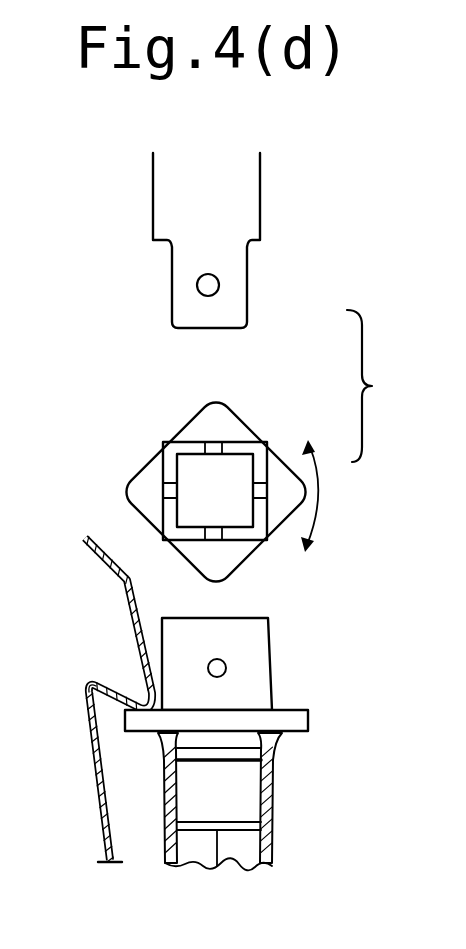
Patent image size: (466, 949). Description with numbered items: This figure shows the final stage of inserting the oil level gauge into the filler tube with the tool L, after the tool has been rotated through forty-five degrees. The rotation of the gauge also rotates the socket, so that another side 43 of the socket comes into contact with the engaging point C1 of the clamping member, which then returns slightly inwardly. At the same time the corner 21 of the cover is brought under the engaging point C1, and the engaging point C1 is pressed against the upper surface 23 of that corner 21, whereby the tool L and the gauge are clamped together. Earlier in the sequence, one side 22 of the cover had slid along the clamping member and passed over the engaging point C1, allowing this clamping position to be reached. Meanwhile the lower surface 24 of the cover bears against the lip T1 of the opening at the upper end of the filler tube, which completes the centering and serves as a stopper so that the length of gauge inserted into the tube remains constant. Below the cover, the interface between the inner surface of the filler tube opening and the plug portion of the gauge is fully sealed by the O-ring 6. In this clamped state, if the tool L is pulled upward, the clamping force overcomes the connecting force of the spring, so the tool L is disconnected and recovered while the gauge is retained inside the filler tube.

The tool L is at (260, 199).
The corner 21 is at (127, 492).
The top surface 23 is at (150, 499).
The side of the socket 43 is at (162, 465).
The side of the cover 22 is at (125, 721).
The engaging point C1 is at (130, 672).
The lower surface 24 is at (137, 734).
The lip of the opening T1 is at (285, 733).
The O-ring 6 is at (233, 762).